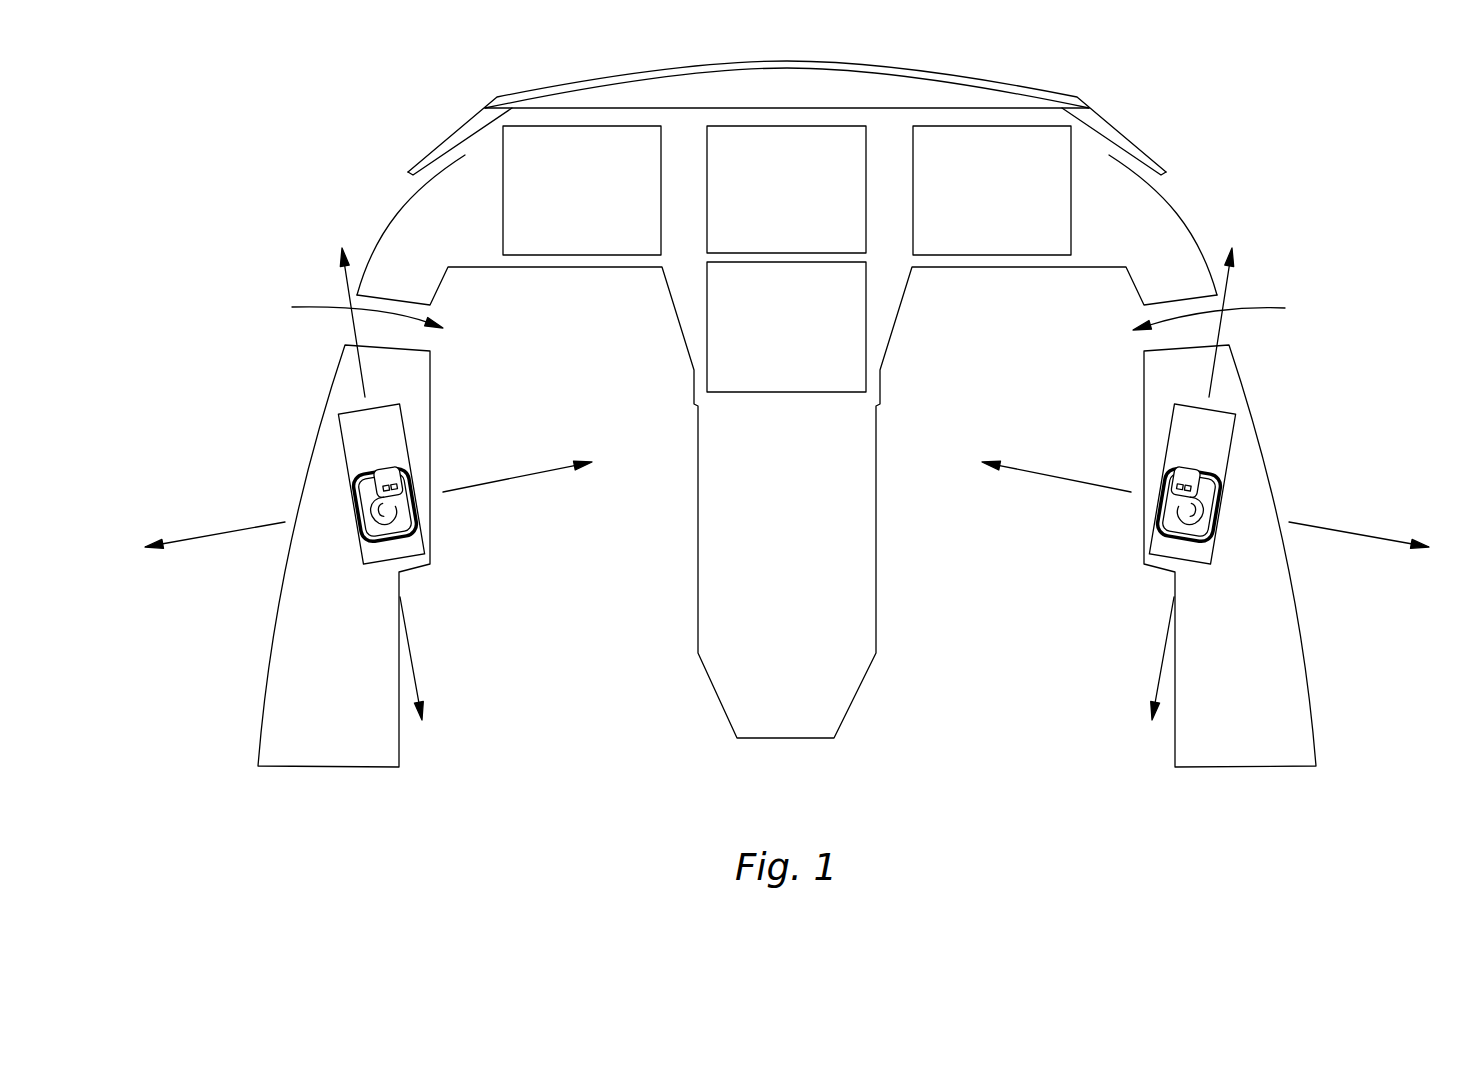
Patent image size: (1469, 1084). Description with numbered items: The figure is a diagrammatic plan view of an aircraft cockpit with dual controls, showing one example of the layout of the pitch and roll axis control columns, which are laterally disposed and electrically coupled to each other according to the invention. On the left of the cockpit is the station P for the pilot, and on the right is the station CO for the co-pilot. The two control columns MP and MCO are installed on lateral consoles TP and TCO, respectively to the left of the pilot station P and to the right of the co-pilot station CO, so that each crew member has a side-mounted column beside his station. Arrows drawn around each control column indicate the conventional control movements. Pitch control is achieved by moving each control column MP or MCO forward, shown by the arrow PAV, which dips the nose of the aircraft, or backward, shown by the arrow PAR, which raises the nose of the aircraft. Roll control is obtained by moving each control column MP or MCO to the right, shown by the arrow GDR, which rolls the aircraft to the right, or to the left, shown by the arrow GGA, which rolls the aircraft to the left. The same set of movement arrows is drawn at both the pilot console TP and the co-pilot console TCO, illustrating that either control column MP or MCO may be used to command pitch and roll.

The forward arrow PAV is at (345, 278).
The backward arrow PAR is at (412, 662).
The left arrow GGA is at (198, 540).
The right arrow GDR is at (497, 483).
The pilot station P is at (356, 309).
The co-pilot station CO is at (1231, 311).
The pilot control column MP is at (412, 432).
The co-pilot control column MCO is at (1243, 463).
The pilot lateral console TP is at (344, 556).
The co-pilot lateral console TCO is at (1230, 556).